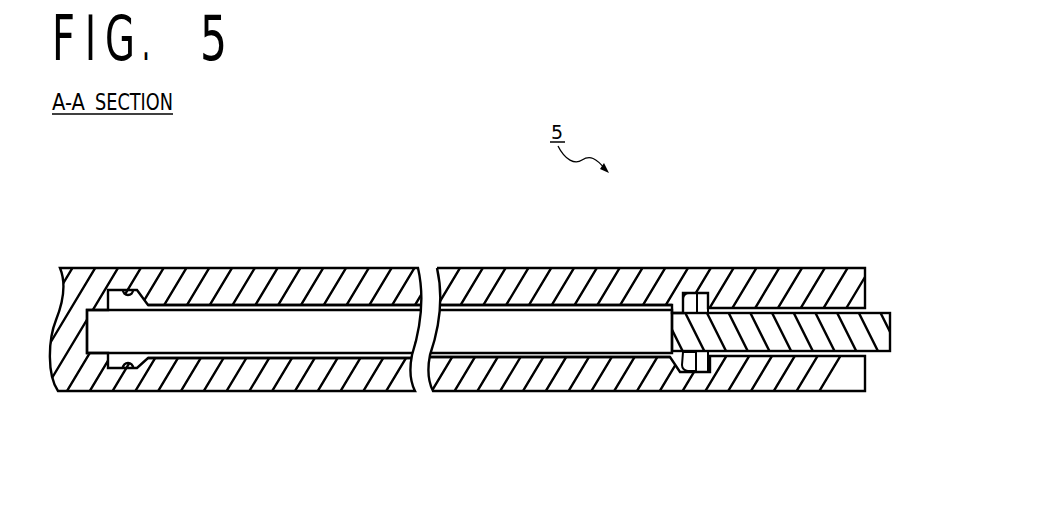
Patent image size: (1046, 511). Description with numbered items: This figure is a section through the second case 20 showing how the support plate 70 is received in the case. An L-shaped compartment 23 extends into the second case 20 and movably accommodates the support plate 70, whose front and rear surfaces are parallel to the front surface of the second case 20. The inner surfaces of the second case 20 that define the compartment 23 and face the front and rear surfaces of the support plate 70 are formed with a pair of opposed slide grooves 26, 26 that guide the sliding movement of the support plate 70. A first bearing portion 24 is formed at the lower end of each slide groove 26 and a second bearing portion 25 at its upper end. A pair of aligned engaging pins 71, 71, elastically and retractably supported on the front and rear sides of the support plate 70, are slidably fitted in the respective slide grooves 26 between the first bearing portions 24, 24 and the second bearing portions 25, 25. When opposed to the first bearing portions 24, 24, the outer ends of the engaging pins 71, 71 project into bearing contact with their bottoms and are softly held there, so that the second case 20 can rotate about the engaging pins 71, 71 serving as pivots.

The second case 20 is at (282, 268).
The compartment 23 is at (243, 338).
The first bearing portion 24 is at (709, 294).
The second bearing portion 25 is at (134, 291).
The slide groove 26 is at (363, 315).
The support plate 70 is at (831, 344).
The engaging pin 71 is at (686, 294).